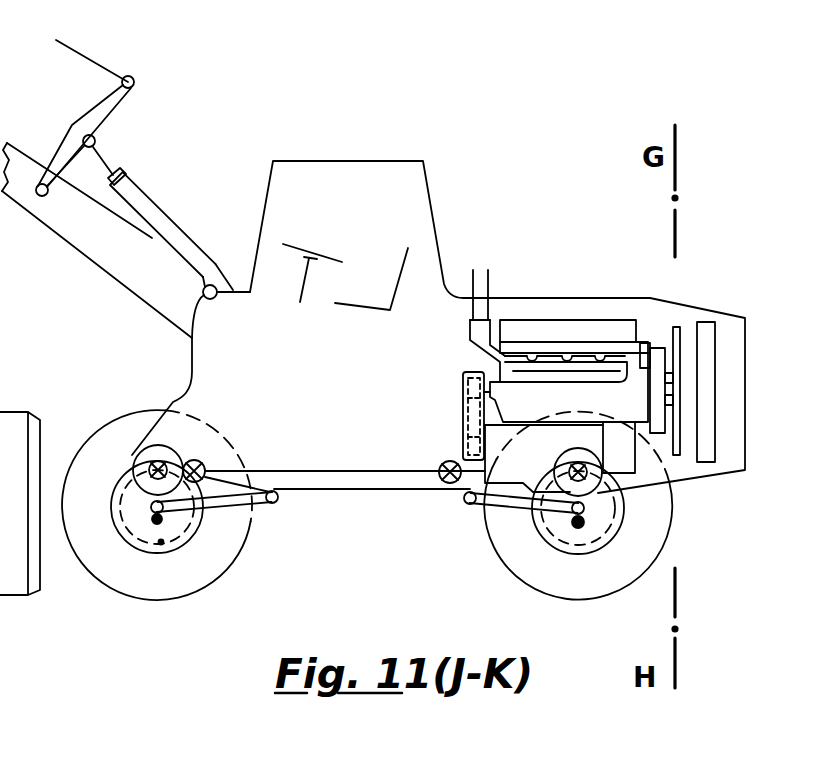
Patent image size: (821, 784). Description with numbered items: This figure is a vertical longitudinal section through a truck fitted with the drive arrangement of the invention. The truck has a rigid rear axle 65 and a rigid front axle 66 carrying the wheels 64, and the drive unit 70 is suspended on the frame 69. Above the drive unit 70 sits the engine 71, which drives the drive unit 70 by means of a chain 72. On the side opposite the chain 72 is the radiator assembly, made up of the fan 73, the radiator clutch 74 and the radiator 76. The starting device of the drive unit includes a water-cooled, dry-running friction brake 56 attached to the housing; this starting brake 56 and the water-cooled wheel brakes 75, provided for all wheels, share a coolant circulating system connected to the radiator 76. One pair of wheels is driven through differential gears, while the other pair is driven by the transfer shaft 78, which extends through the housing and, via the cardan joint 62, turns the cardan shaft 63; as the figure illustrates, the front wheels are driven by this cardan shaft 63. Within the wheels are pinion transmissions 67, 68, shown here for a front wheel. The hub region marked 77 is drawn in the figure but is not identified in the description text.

The friction brake 56 is at (625, 478).
The cardan joint 62 is at (416, 408).
The cardan shaft 63 is at (328, 472).
The wheels 64 is at (3, 410).
The rear axle 65 is at (583, 527).
The front axle 66 is at (157, 519).
The pinion transmission 67 is at (147, 487).
The pinion transmission 68 is at (161, 545).
The frame 69 is at (375, 487).
The drive unit 70 is at (520, 460).
The engine 71 is at (567, 332).
The chain 72 is at (473, 417).
The fan 73 is at (665, 390).
The radiator clutch 74 is at (680, 340).
The wheel brakes 75 is at (560, 492).
The radiator 76 is at (708, 435).
The front wheel hub 77 is at (155, 447).
The transfer shaft 78 is at (473, 472).